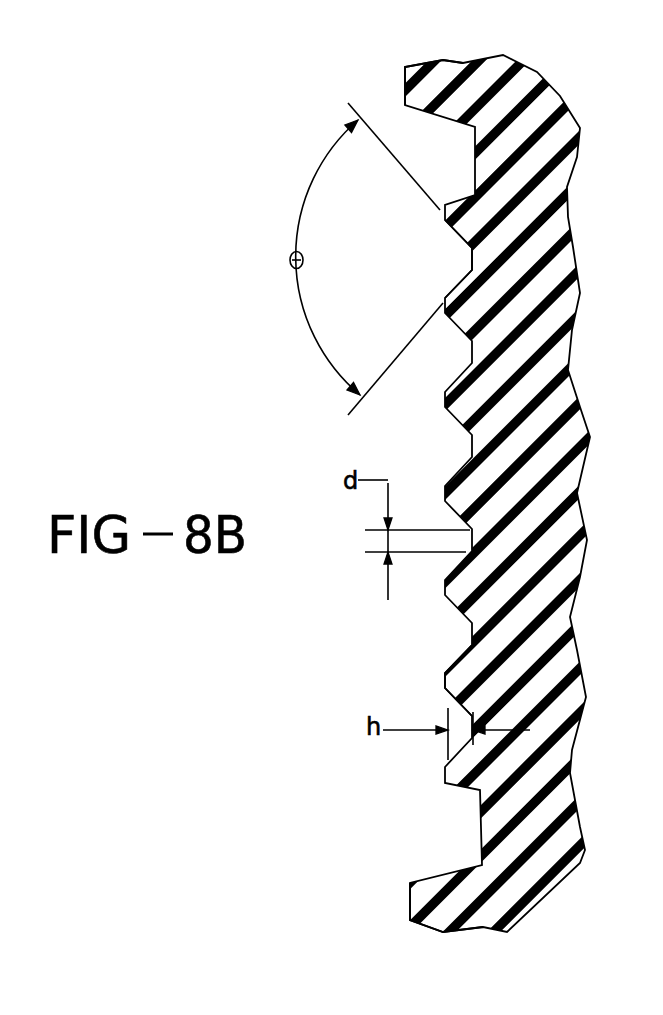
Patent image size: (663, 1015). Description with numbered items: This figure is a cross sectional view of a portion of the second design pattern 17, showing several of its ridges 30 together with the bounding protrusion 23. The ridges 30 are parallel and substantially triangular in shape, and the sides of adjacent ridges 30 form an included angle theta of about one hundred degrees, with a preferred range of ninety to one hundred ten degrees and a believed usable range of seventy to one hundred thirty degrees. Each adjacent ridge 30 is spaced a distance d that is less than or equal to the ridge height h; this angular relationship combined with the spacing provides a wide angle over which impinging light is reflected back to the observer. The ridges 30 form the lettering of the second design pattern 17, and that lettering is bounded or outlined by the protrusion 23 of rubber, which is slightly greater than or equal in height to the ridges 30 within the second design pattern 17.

The protrusion 23 is at (413, 74).
The second design pattern 17 is at (492, 243).
The ridges 30 is at (466, 672).